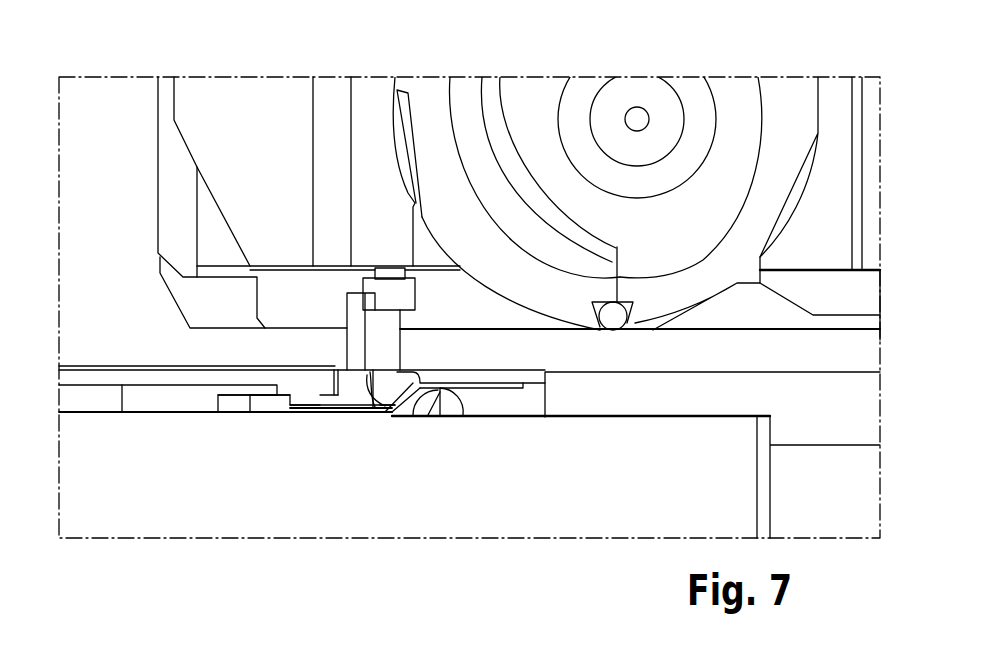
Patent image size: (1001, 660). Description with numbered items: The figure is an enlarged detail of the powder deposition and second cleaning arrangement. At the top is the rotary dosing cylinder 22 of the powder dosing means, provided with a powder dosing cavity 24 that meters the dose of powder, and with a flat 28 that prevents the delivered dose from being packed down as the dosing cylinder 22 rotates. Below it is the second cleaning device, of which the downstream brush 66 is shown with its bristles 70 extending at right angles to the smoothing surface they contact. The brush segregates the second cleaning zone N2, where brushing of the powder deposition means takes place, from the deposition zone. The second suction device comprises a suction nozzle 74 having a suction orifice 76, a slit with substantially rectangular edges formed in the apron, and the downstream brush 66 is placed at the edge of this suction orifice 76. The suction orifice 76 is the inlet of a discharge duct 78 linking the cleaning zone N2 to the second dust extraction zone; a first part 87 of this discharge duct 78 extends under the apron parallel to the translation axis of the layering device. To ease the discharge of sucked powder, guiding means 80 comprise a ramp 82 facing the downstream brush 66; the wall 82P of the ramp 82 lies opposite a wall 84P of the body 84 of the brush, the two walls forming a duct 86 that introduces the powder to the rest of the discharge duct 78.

The rotary dosing cylinder 22 is at (790, 107).
The powder dosing cavity 24 is at (615, 247).
The flat 28 is at (418, 130).
The bristles 70 is at (355, 347).
The wall of the body of the downstream brush 84P is at (368, 378).
The suction orifice 76 is at (405, 372).
The wall of the ramp 82P is at (463, 417).
The ramp 82 is at (417, 418).
The means for guiding the sucked powder 80 is at (448, 434).
The suction nozzle 74 is at (388, 426).
The duct for introducing the powder 86 is at (373, 417).
The body of the downstream brush 84 is at (362, 416).
The downstream brush 66 is at (333, 428).
The discharge duct 78 is at (303, 416).
The first part of the discharge duct 87 is at (270, 408).
The second cleaning zone N2 is at (712, 455).